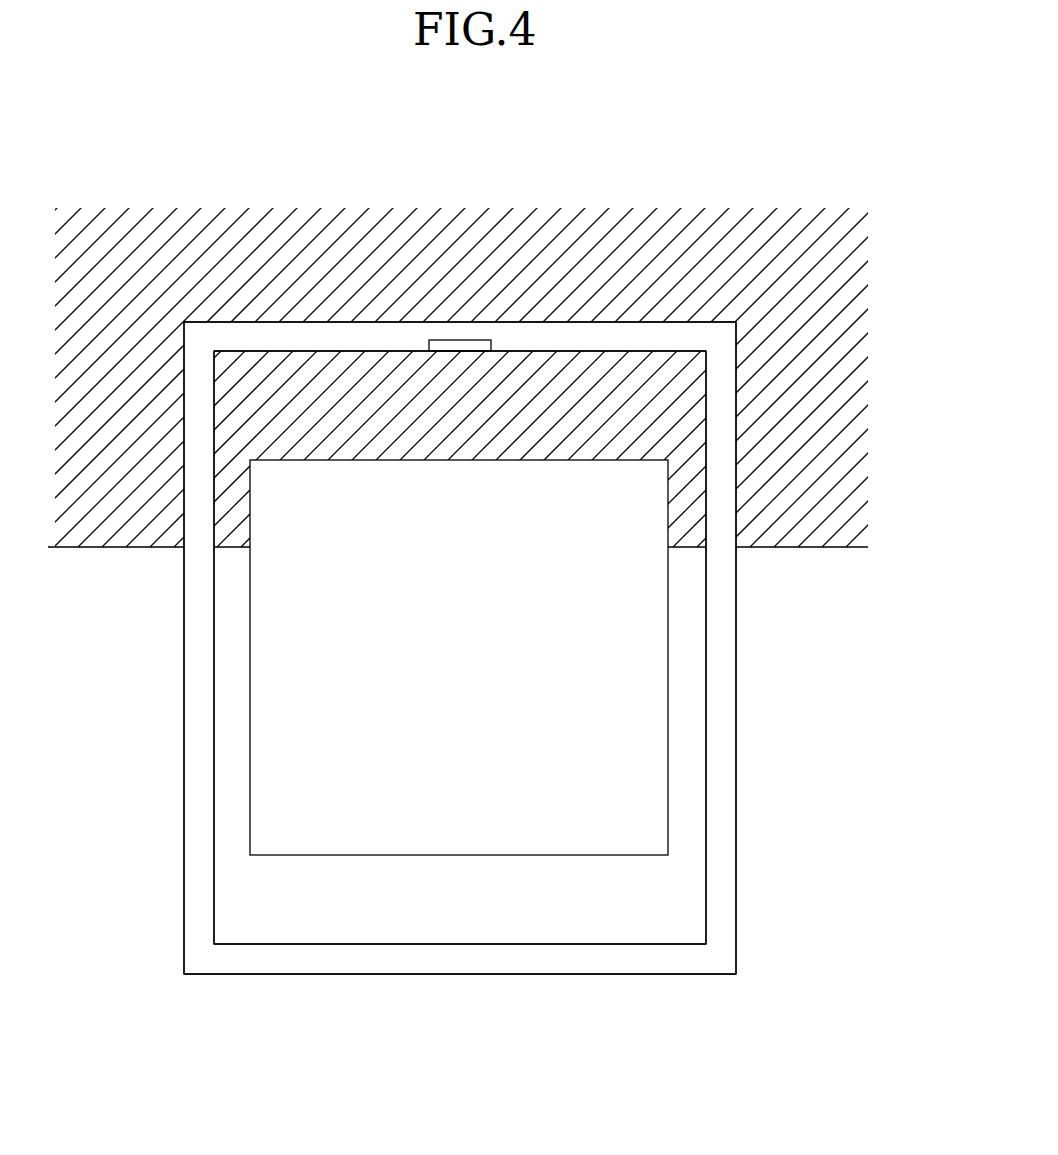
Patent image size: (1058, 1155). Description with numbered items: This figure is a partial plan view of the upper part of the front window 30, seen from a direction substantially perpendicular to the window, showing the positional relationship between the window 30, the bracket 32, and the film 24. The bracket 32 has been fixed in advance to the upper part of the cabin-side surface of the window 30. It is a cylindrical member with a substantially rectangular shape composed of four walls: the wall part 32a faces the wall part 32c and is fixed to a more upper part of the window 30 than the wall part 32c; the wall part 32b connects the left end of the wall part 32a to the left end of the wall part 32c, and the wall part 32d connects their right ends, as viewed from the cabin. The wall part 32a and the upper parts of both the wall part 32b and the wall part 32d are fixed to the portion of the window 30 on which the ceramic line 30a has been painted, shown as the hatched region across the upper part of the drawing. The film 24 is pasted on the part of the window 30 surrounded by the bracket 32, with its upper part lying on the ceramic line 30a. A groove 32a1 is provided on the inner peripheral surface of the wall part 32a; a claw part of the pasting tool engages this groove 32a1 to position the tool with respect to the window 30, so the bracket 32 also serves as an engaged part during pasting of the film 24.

The film 24 is at (268, 783).
The front window 30 is at (853, 628).
The ceramic line 30a is at (848, 408).
The bracket 32 is at (195, 621).
The wall part 32a is at (560, 333).
The groove 32a1 is at (453, 340).
The wall part 32b is at (200, 688).
The wall part 32c is at (450, 960).
The wall part 32d is at (721, 681).